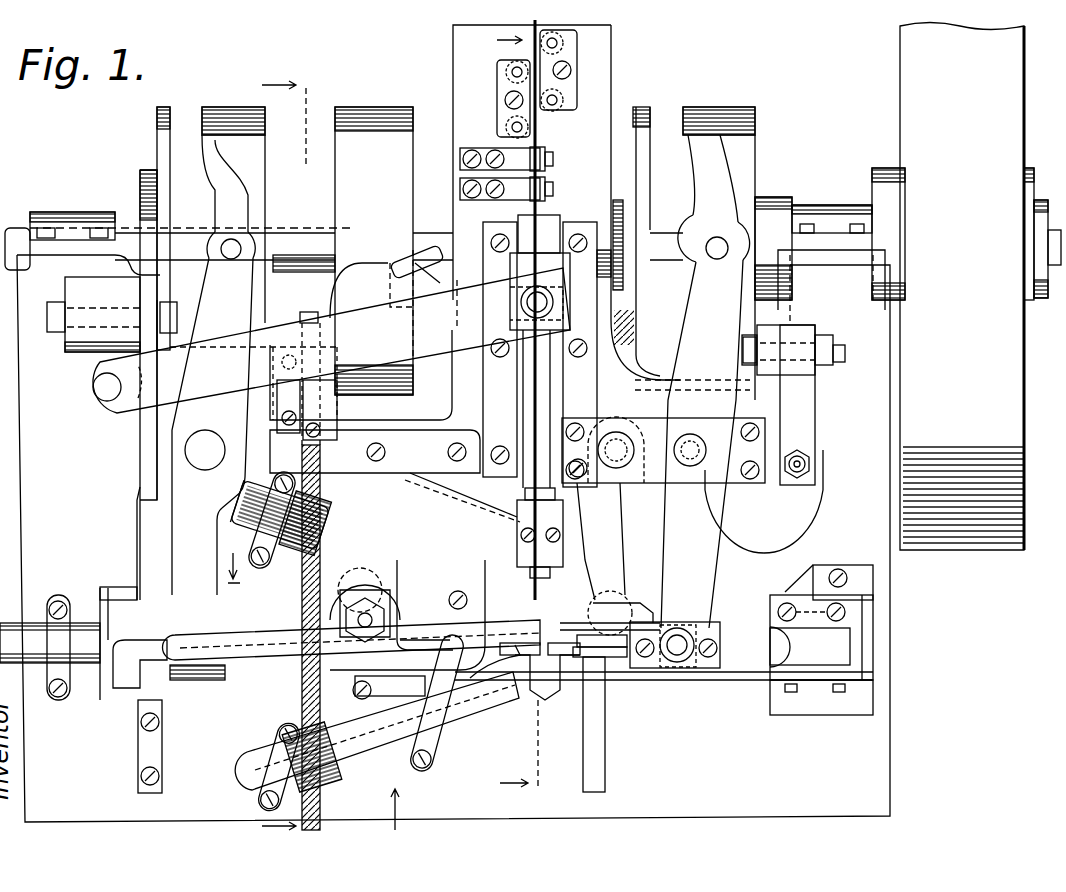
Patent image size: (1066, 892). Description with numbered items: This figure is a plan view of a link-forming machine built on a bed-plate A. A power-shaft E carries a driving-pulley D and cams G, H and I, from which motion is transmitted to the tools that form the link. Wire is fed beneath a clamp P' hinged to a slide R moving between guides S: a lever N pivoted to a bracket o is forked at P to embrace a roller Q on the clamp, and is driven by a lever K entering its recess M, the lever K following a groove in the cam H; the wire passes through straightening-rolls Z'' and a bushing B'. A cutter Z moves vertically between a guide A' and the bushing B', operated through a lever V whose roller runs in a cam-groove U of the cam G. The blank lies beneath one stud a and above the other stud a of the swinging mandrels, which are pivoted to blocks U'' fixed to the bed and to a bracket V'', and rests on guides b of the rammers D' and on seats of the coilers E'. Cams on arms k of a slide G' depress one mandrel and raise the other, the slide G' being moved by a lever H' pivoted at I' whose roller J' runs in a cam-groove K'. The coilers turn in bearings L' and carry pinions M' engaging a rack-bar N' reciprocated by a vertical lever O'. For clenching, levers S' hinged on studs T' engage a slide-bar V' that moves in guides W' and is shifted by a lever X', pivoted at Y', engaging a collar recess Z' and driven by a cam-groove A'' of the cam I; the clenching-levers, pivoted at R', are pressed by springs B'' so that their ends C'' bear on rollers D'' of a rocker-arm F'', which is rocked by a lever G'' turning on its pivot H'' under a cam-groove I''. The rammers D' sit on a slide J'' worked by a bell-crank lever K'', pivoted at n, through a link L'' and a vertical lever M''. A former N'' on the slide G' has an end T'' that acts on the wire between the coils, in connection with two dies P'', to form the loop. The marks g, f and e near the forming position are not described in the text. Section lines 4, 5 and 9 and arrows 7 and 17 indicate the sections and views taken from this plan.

The bed-plate A is at (453, 538).
The driving-pulley D is at (962, 287).
The power-shaft E is at (1047, 267).
The cam-groove I'' is at (144, 353).
The cam I is at (253, 394).
The cam-groove A'' is at (233, 215).
The pivot H'' is at (117, 308).
The lever G'' is at (130, 450).
The bracket o is at (85, 372).
The cam H is at (374, 251).
The recess M is at (403, 257).
The lever K is at (423, 305).
The lever N is at (361, 341).
The vertical lever O' is at (323, 378).
The bracket V'' is at (395, 476).
The section line 4 4 is at (523, 420).
The straightening-rolls Z'' is at (546, 115).
The slide R is at (506, 205).
The guides S is at (540, 354).
The fork P is at (512, 302).
The roller Q is at (524, 293).
The clamp P' is at (572, 280).
The cam-groove U is at (623, 241).
The cam G is at (673, 207).
The transversely-arranged lever V is at (652, 270).
The cam-groove K' is at (708, 253).
The roller J' is at (714, 250).
The lever H' is at (686, 464).
The bell-crank lever K'' is at (764, 501).
The pivot n is at (617, 440).
The pivot I' is at (690, 428).
The link L'' is at (797, 405).
The vertical lever M'' is at (813, 312).
The slide J'' is at (821, 640).
The slide G' is at (664, 674).
The rammer D' is at (617, 724).
The end of former T'' is at (592, 727).
The cutter Z is at (525, 533).
The bushing B' is at (508, 489).
The arrow 17 is at (627, 510).
The guide A' is at (615, 559).
The arms k is at (632, 592).
The former N'' is at (644, 593).
The stud a is at (507, 720).
The section line 9 9 is at (375, 592).
The guide g is at (503, 660).
The finger f is at (528, 680).
The finger e is at (540, 660).
The guide b is at (555, 660).
The dies P'' is at (493, 676).
The pivot Y' is at (208, 440).
The bearings L' is at (335, 624).
The rack-bar N' is at (319, 637).
The pinions M' is at (302, 633).
The coiler E' is at (352, 638).
The lever X' is at (192, 524).
The recess Z' is at (154, 587).
The levers S' is at (367, 581).
The studs T' is at (407, 615).
The springs B'' is at (352, 658).
The pivot R' is at (297, 684).
The blocks U'' is at (332, 719).
The ends of clenching-levers C'' is at (133, 644).
The roller D'' is at (167, 746).
The rocker-arm F'' is at (81, 704).
The guides W' is at (44, 647).
The slide-bar V' is at (50, 627).
The section line 5 5 is at (306, 445).
The arrow 7 is at (402, 809).